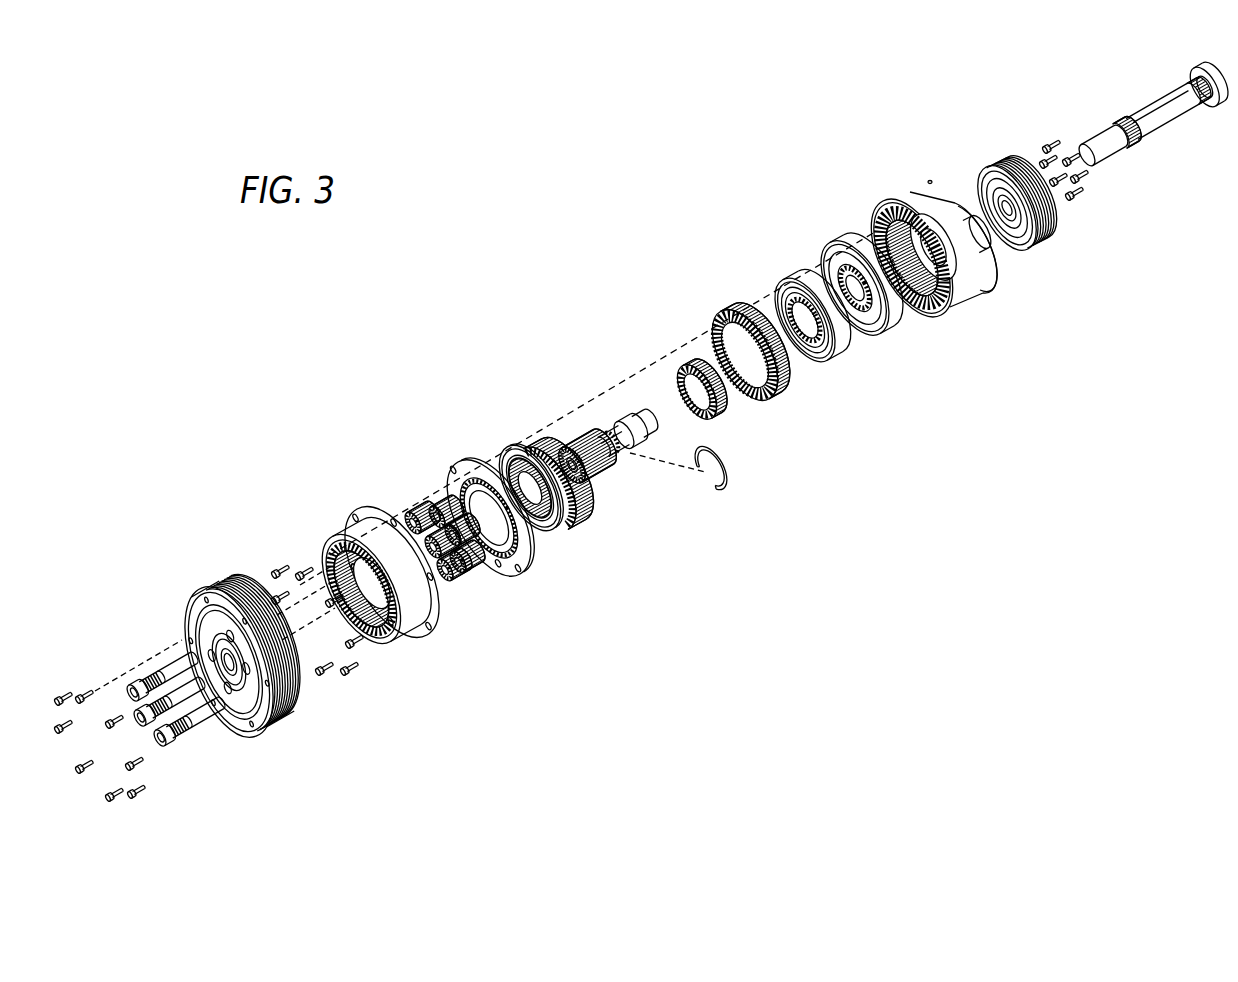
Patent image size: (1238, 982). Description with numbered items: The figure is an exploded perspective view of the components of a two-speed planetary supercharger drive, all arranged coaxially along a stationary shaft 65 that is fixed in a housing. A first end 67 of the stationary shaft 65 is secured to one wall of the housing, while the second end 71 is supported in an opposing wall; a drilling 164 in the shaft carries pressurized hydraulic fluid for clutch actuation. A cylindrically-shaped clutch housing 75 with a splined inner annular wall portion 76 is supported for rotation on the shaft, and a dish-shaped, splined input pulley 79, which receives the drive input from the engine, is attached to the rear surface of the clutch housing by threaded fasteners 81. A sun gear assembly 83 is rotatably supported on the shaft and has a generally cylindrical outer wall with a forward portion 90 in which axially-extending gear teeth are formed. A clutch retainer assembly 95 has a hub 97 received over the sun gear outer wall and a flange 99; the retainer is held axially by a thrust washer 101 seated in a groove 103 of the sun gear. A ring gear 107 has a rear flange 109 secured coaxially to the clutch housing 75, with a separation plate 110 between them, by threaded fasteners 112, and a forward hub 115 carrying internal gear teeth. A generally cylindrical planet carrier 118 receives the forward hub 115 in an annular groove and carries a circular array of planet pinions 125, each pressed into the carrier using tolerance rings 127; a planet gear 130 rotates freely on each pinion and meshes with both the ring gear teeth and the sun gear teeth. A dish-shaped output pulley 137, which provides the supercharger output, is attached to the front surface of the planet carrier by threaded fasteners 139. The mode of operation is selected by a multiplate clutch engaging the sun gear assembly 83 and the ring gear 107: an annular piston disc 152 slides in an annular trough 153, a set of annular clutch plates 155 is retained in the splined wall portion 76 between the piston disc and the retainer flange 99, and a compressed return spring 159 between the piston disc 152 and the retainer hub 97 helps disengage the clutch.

The threaded fasteners 139 is at (72, 676).
The output pulley 137 is at (218, 598).
The planet pinions 125 is at (230, 750).
The planet carrier 118 is at (241, 700).
The tolerance rings 127 is at (186, 740).
The threaded fasteners 112 is at (262, 557).
The ring gear 107 is at (322, 535).
The rear flange 109 is at (367, 517).
The forward hub 115 is at (400, 627).
The planet gear 130 is at (473, 588).
The separation plate 110 is at (447, 477).
The flange 99 is at (508, 445).
The hub 97 is at (530, 447).
The clutch retainer assembly 95 is at (561, 557).
The groove 103 is at (585, 442).
The forward portion 90 is at (600, 480).
The sun gear assembly 83 is at (641, 484).
The thrust washer 101 is at (710, 490).
The return spring 159 is at (712, 418).
The clutch plates 155 is at (688, 328).
The piston disc 152 is at (833, 354).
The annular trough 153 is at (837, 265).
The clutch housing 75 is at (904, 190).
The splined inner annular wall portion 76 is at (931, 317).
The input pulley 79 is at (988, 172).
The threaded fasteners 81 is at (1073, 215).
The second end 71 is at (1092, 142).
The drilling 164 is at (1157, 110).
The stationary shaft 65 is at (1137, 134).
The first end 67 is at (1214, 103).